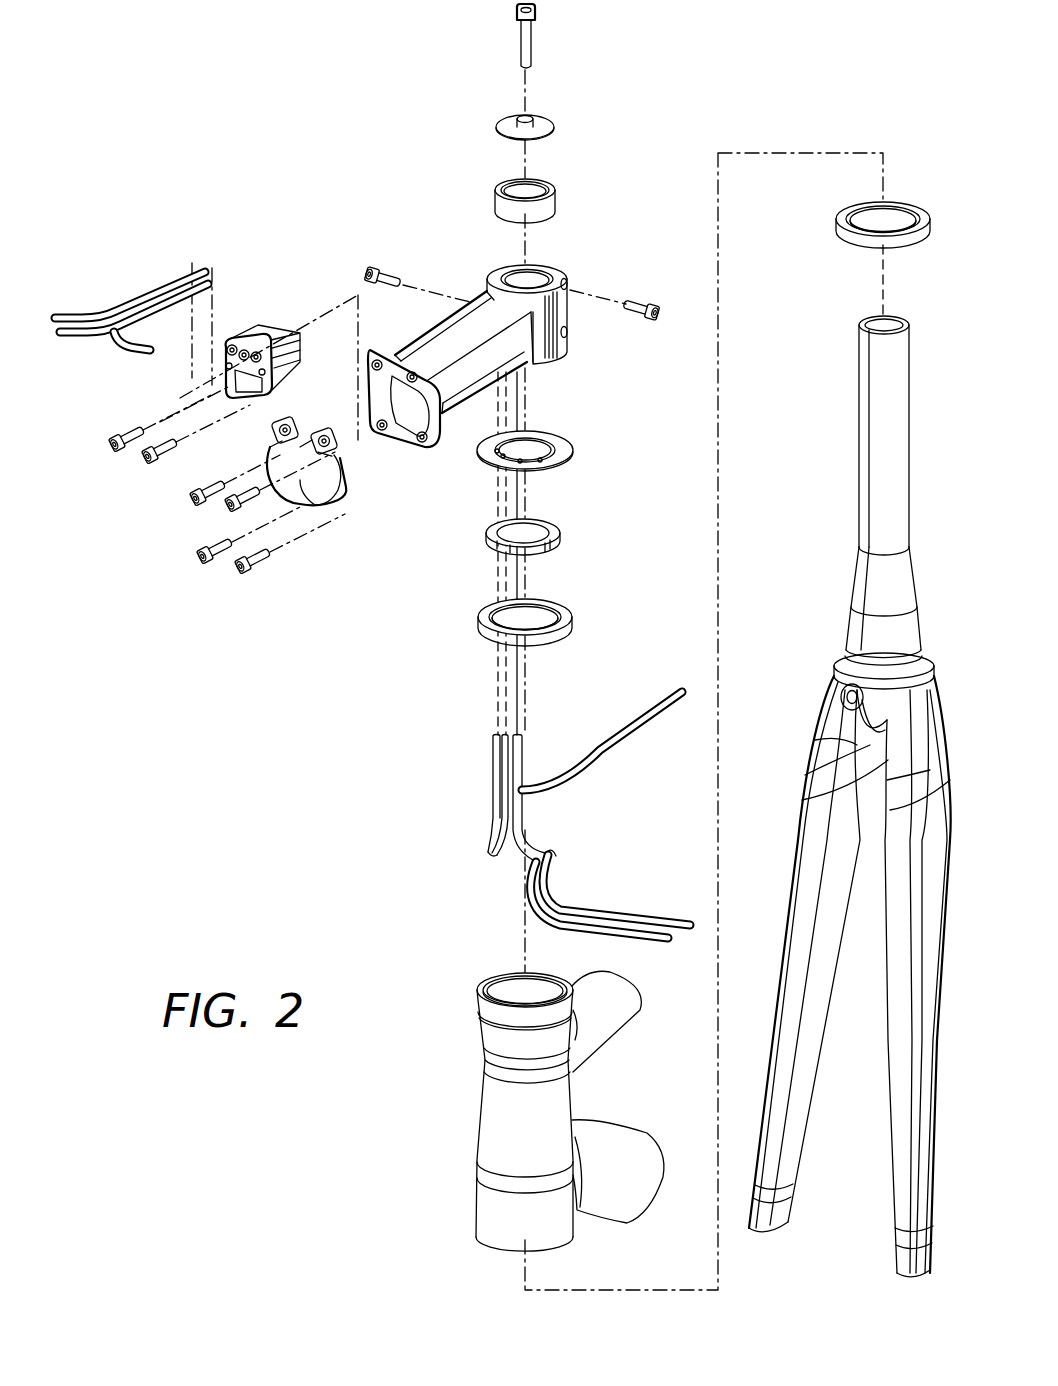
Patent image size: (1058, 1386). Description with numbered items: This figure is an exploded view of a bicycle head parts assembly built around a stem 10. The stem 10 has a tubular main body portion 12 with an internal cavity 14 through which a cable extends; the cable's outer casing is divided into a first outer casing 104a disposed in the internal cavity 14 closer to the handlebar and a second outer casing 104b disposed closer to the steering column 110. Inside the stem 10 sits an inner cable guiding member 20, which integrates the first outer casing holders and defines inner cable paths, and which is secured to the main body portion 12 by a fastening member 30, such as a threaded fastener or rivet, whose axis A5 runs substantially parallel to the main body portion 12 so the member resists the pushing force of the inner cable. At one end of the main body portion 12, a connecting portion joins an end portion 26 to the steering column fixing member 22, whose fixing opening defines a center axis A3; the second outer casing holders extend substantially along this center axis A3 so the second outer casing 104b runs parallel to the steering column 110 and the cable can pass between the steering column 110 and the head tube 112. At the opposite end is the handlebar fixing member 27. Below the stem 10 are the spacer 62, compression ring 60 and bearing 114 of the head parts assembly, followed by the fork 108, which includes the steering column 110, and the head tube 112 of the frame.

The stem 10 is at (470, 268).
The tubular main body portion 12 is at (438, 340).
The internal cavity 14 is at (422, 407).
The inner cable guiding member 20 is at (264, 326).
The steering column fixing member 22 is at (557, 268).
The end portion 26 is at (532, 330).
The handlebar fixing member 27 is at (313, 490).
The fastening member 30 is at (148, 462).
The compression ring 60 is at (560, 533).
The spacer 62 is at (575, 452).
The first outer casing 104a is at (163, 283).
The second outer casing 104b is at (513, 793).
The fork 108 is at (813, 832).
The steering column 110 is at (859, 430).
The head tube 112 is at (495, 1120).
The bearing 114 is at (480, 618).
The center axis A3 is at (527, 230).
The axis A5 is at (157, 420).